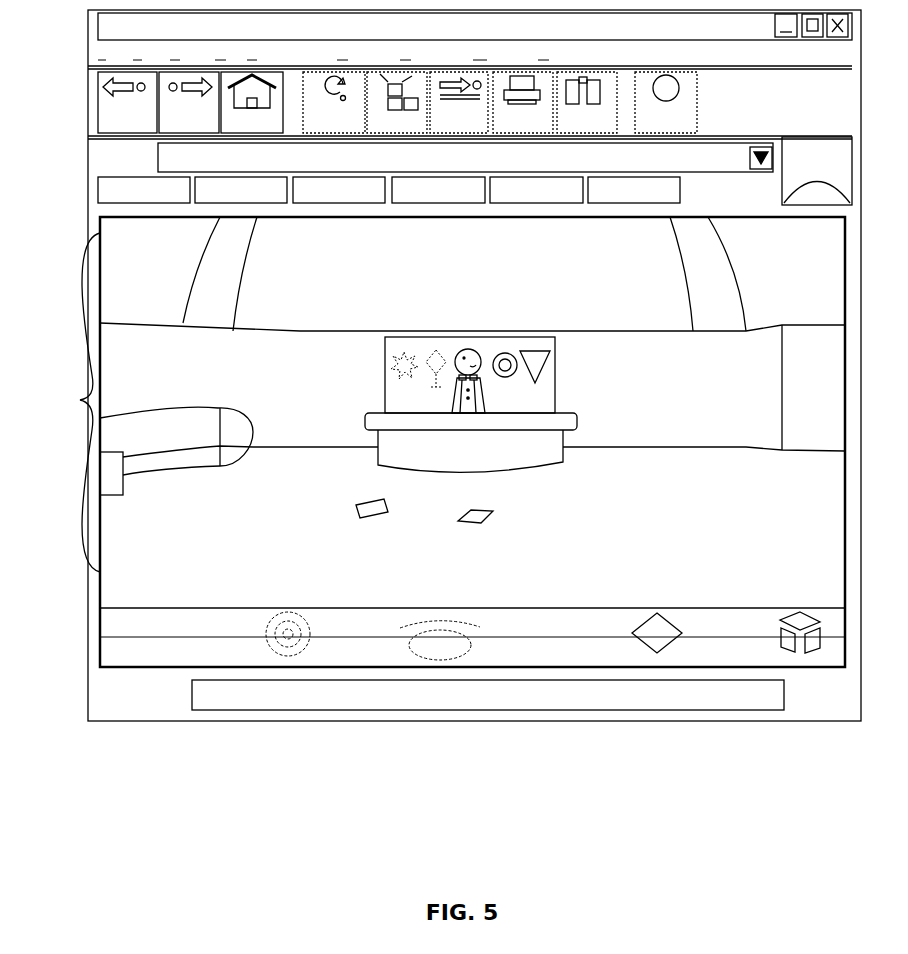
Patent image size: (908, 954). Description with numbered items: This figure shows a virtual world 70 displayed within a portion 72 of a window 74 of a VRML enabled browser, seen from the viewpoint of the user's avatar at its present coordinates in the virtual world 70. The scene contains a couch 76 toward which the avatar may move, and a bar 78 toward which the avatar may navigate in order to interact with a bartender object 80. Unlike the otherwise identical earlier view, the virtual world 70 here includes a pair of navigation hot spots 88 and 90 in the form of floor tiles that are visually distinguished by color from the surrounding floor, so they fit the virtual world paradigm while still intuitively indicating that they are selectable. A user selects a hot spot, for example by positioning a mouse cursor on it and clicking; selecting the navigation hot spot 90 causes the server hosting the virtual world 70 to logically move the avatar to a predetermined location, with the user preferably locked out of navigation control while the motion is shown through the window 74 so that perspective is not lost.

The virtual world 70 is at (148, 480).
The portion 72 is at (80, 400).
The window 74 is at (130, 722).
The couch 76 is at (167, 433).
The bar 78 is at (520, 455).
The bartender object 80 is at (458, 410).
The navigation hot spot 88 is at (367, 510).
The navigation hot spot 90 is at (473, 526).